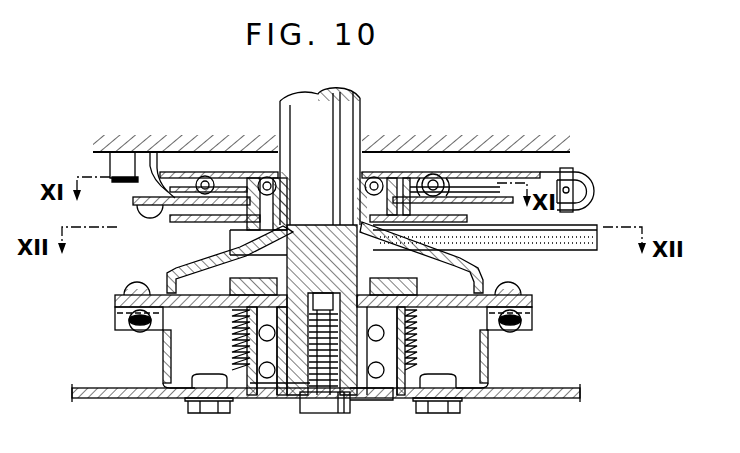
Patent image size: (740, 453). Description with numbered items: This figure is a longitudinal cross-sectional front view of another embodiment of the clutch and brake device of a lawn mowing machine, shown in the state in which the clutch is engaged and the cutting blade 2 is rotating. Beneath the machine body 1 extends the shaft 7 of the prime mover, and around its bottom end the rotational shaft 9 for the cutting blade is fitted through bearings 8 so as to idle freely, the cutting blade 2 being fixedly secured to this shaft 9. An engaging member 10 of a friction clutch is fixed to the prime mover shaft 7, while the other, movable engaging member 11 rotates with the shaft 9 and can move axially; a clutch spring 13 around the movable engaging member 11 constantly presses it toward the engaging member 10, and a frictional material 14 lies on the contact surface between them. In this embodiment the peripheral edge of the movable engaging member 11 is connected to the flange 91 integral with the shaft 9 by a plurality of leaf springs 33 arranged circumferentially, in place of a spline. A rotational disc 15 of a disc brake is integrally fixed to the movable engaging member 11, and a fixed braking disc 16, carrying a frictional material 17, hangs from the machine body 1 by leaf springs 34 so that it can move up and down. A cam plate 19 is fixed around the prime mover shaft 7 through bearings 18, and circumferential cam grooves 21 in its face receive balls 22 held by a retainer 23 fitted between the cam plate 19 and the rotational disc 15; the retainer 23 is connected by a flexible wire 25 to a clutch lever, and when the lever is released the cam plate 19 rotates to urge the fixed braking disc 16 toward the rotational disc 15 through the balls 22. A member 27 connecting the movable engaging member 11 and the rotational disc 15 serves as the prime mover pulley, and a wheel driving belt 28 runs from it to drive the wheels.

The machine body 1 is at (97, 152).
The cutting blade 2 is at (110, 399).
The shaft for the prime mover 7 is at (280, 106).
The bearings 8 is at (270, 405).
The rotational shaft for a cutting blade 9 is at (232, 347).
The engaging member 10 is at (203, 259).
The movable engaging member 11 is at (188, 312).
The clutch spring 13 is at (237, 394).
The frictional material 14 is at (170, 271).
The rotational disc 15 is at (173, 223).
The fixed braking disc 16 is at (133, 199).
The frictional material 17 is at (313, 262).
The bearings 18 is at (375, 165).
The cam plate 19 is at (485, 171).
The cam grooves 21 is at (435, 172).
The balls 22 is at (440, 176).
The retainer 23 is at (495, 178).
The flexible wire 25 is at (583, 178).
The member 27 is at (467, 261).
The wheel driving belt 28 is at (550, 244).
The leaf springs 33 is at (115, 316).
The leaf springs 34 is at (168, 152).
The flange 91 is at (115, 333).